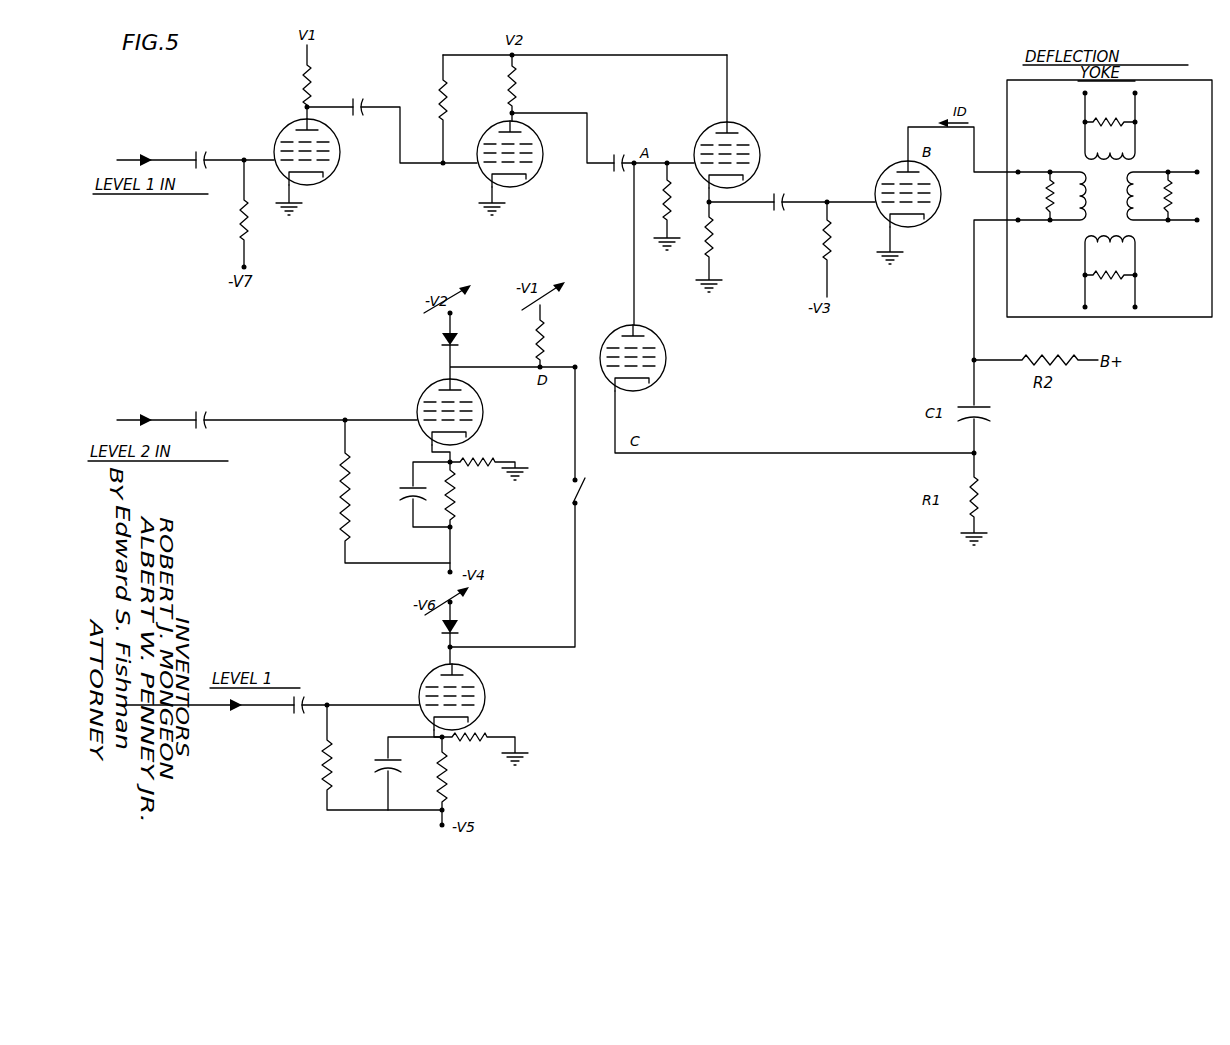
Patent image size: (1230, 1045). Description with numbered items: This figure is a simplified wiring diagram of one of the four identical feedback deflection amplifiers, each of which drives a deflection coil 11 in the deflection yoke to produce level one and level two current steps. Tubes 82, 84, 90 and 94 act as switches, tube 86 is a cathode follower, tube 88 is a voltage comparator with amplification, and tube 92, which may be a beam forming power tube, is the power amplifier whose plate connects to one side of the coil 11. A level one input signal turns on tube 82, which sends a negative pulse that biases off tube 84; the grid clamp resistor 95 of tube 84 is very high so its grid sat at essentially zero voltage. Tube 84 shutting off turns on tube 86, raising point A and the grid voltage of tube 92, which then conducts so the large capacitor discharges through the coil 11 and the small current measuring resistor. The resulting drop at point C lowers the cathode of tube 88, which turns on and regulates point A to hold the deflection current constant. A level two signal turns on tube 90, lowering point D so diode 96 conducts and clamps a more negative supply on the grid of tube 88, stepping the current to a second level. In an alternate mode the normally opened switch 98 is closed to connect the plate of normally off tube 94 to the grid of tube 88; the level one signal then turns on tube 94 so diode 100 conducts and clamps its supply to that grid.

The deflection coil 11 is at (1077, 227).
The tube 82 is at (326, 178).
The tube 84 is at (525, 182).
The tube 86 is at (761, 168).
The tube 88 is at (664, 352).
The tube 90 is at (483, 424).
The tube 92 is at (928, 220).
The tube 94 is at (486, 708).
The grid clamp resistor 95 is at (440, 92).
The diode 96 is at (444, 339).
The switch 98 is at (584, 492).
The diode 100 is at (460, 629).